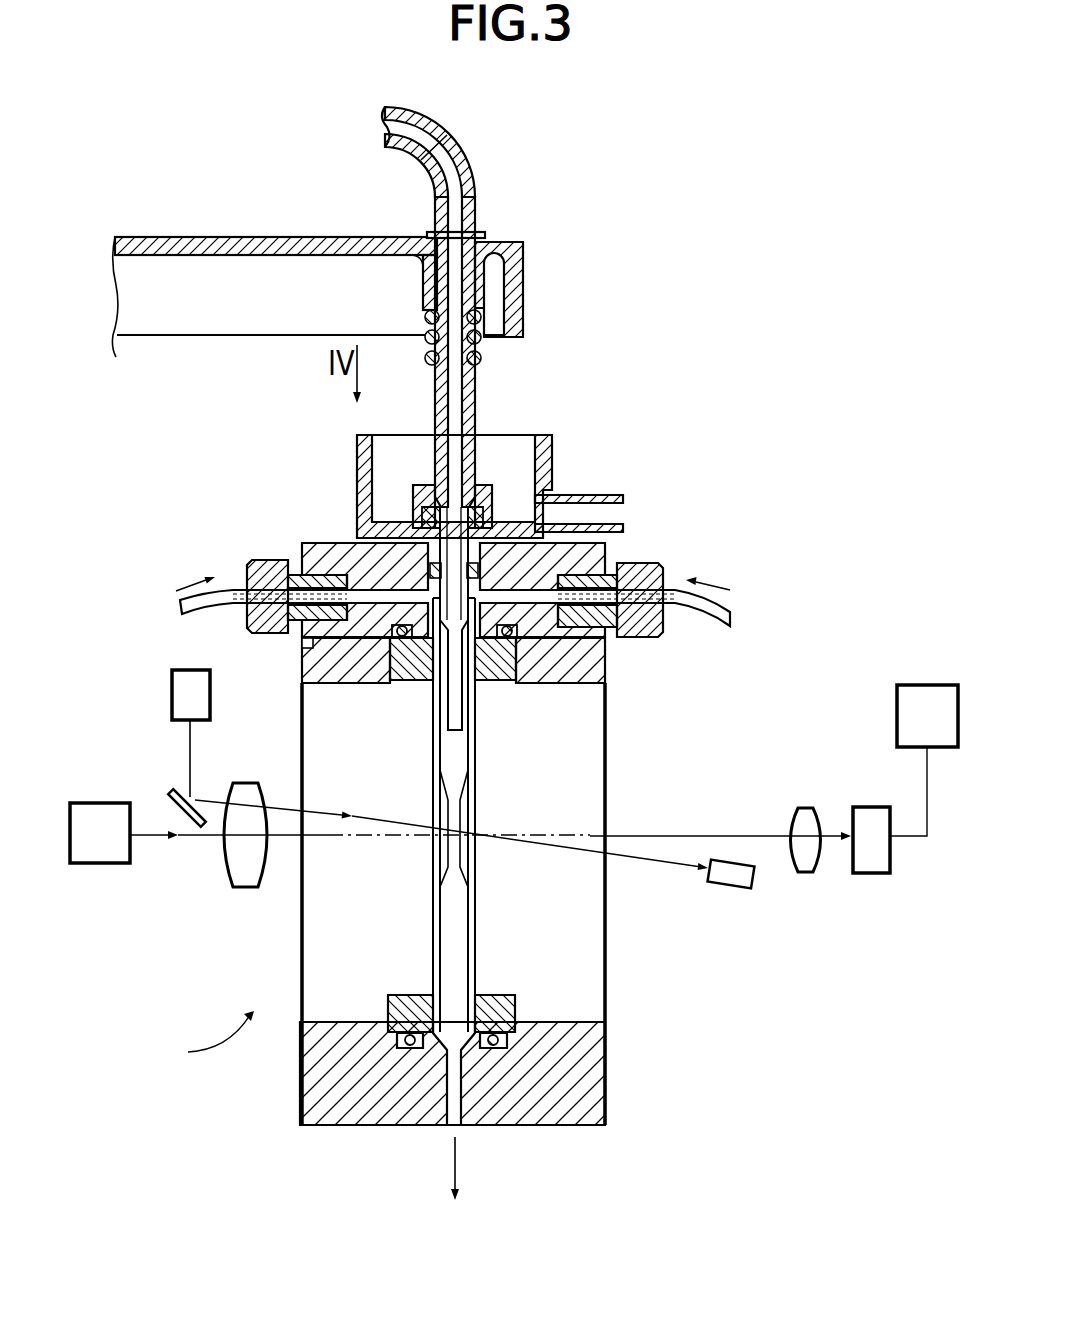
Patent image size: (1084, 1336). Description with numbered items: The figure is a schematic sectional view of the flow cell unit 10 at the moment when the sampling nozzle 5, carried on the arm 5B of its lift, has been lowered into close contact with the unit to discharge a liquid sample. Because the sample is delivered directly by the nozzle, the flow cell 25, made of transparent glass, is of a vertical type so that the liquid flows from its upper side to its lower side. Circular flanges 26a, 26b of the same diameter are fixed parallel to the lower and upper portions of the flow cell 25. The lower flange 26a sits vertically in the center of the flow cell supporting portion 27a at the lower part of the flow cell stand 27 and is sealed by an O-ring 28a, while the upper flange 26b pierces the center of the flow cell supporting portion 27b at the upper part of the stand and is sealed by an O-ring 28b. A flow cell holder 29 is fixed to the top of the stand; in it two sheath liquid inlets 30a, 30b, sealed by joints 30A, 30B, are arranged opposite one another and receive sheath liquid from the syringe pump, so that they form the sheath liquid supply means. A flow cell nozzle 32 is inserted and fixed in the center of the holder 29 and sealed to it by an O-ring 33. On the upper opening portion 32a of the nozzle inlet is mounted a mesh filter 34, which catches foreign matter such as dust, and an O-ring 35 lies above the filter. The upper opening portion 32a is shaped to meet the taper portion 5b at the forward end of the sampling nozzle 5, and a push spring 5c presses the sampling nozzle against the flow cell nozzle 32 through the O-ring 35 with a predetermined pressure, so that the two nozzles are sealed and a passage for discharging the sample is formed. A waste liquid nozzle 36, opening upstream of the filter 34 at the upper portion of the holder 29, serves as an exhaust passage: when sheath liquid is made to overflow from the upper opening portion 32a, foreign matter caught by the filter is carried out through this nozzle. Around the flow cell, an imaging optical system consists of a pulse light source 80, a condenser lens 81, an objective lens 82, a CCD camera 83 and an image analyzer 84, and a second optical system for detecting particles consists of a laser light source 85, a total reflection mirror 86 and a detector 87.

The sampling nozzle 5 is at (470, 380).
The arm 5B is at (168, 237).
The taper portion 5b is at (467, 483).
The push spring 5c is at (483, 356).
The flow cell unit 10 is at (199, 1040).
The flow cell 25 is at (476, 893).
The circular flange 26a is at (517, 1000).
The circular flange 26b is at (492, 665).
The flow cell stand 27 is at (607, 958).
The flow cell supporting portion 27a is at (573, 1117).
The flow cell supporting portion 27b is at (577, 670).
The O-ring 28a is at (505, 1047).
The O-ring 28b is at (512, 640).
The flow cell holder 29 is at (603, 543).
The joint 30A is at (660, 565).
The joint 30B is at (250, 563).
The sheath liquid inlet 30a is at (660, 636).
The sheath liquid inlet 30b is at (270, 633).
The flow cell nozzle 32 is at (357, 445).
The upper opening portion 32a is at (430, 488).
The O-ring 33 is at (430, 566).
The filter 34 is at (422, 518).
The O-ring 35 is at (413, 490).
The waste liquid nozzle 36 is at (615, 497).
The pulse light source 80 is at (107, 850).
The condenser lens 81 is at (245, 887).
The objective lens 82 is at (808, 807).
The CCD camera 83 is at (875, 875).
The image analyzer 84 is at (932, 690).
The laser light source 85 is at (172, 693).
The total reflection mirror 86 is at (173, 790).
The detector 87 is at (738, 885).